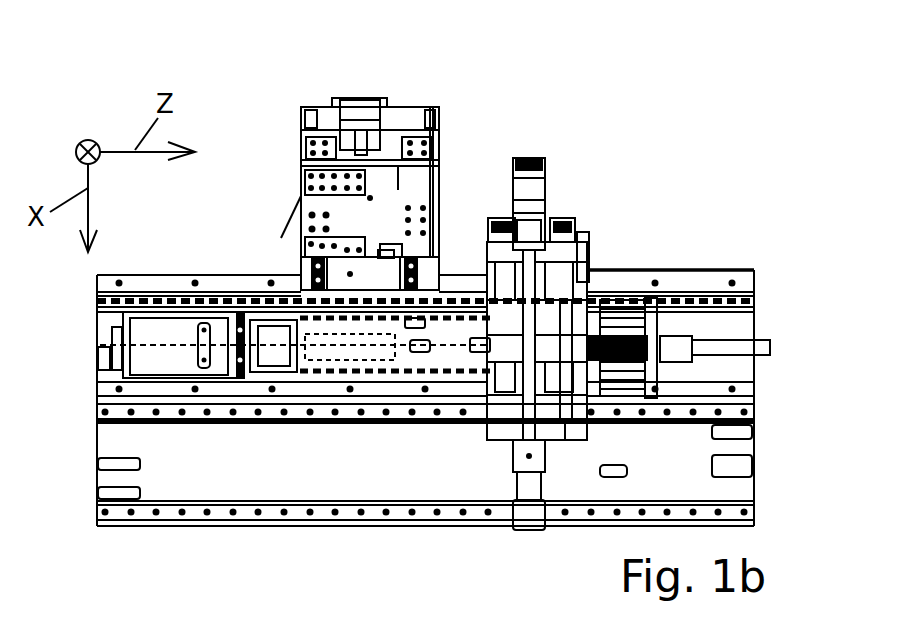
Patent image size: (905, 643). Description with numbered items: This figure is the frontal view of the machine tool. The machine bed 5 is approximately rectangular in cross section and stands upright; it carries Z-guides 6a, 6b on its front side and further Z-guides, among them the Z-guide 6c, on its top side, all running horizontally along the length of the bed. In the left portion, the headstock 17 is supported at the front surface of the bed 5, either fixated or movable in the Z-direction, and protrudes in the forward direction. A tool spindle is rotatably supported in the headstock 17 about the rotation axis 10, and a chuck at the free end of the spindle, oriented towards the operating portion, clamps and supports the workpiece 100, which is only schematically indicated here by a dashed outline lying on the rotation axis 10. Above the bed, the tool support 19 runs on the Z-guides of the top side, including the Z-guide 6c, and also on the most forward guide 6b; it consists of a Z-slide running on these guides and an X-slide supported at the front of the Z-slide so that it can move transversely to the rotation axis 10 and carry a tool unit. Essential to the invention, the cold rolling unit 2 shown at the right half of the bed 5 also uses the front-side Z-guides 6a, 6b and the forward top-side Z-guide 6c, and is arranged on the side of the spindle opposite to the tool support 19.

The cold rolling unit 2 is at (614, 241).
The machine bed 5 is at (425, 398).
The Z-guide 6a is at (745, 413).
The Z-guide 6b is at (745, 286).
The Z-guide 6c is at (718, 269).
The rotation axis 10 is at (223, 345).
The headstock 17 is at (171, 345).
The tool support 19 is at (270, 111).
The workpiece 100 is at (295, 345).